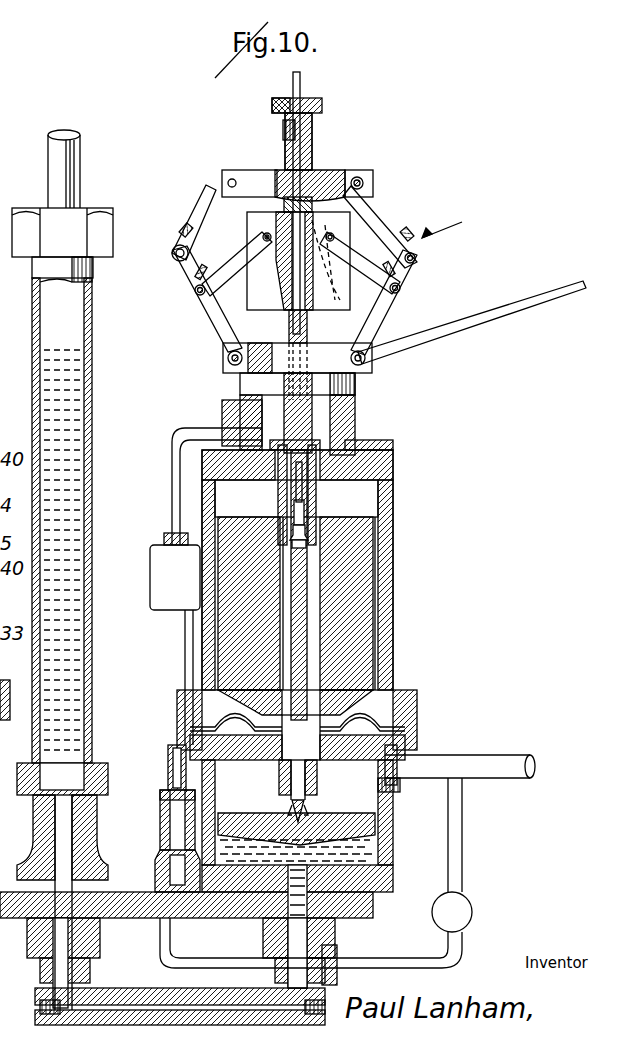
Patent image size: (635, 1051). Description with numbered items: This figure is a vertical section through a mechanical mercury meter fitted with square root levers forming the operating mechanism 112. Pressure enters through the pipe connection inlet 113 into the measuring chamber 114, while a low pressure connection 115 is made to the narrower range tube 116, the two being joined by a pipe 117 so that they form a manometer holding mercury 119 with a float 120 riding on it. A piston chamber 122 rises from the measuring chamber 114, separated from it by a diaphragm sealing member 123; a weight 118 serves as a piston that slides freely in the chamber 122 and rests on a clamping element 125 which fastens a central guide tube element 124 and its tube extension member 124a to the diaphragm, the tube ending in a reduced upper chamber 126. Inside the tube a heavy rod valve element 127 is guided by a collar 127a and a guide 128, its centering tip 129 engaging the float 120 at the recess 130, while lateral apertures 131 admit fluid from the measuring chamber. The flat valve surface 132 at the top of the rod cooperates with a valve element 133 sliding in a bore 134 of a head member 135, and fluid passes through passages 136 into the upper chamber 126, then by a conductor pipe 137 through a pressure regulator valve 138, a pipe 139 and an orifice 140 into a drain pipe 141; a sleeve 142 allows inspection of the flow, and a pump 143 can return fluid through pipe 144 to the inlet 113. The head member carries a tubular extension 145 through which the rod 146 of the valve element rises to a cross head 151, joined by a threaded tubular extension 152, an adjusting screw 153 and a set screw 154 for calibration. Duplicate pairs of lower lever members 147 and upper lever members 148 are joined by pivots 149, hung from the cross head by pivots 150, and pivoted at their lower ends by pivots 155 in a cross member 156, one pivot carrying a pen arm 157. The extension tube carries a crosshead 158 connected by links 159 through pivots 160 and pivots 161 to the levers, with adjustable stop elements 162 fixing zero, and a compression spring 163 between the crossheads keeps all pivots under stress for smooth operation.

The operating mechanism 112 is at (465, 224).
The pipe connection inlet 113 is at (468, 755).
The measuring chamber 114 is at (235, 738).
The low pressure connection 115 is at (50, 176).
The range tube 116 is at (34, 305).
The connecting pipe 117 is at (122, 1026).
The weight 118 is at (365, 595).
The mercury 119 is at (365, 855).
The float 120 is at (372, 828).
The piston chamber 122 is at (395, 640).
The sealing member 123 is at (395, 700).
The central guide tube element 124 is at (320, 570).
The tube extension member 124a is at (270, 758).
The clamping element 125 is at (322, 748).
The upper chamber 126 is at (356, 410).
The rod valve element 127 is at (282, 612).
The collar 127a is at (378, 540).
The guide 128 is at (290, 792).
The centering tip 129 is at (308, 810).
The needle 130 is at (292, 810).
The lateral apertures 131 is at (318, 775).
The flat valve surface 132 is at (292, 545).
The valve element 133 is at (292, 505).
The bore 134 is at (306, 488).
The head member 135 is at (240, 428).
The passages 136 is at (320, 455).
The conductor pipe 137 is at (172, 456).
The pressure regulator valve 138 is at (150, 580).
The pipe 139 is at (184, 670).
The orifice 140 is at (170, 782).
The drain pipe 141 is at (160, 870).
The sleeve 142 is at (160, 836).
The pump 143 is at (472, 908).
The pipe 144 is at (463, 850).
The tubular extension 145 is at (308, 385).
The rod 146 is at (300, 322).
The lower lever member 147 is at (205, 310).
The upper lever member 148 is at (222, 180).
The pivots 149 is at (178, 262).
The pivots 150 is at (232, 179).
The cross head 151 is at (325, 180).
The tubular extension 152 is at (312, 150).
The adjusting screw 153 is at (318, 103).
The set screw 154 is at (272, 105).
The pivots 155 is at (227, 358).
The cross member 156 is at (275, 340).
The pen arm 157 is at (495, 317).
The crosshead 158 is at (197, 296).
The links 159 is at (242, 258).
The pivots 160 is at (267, 233).
The pivots 161 is at (196, 300).
The stop element 162 is at (180, 232).
The spring 163 is at (300, 205).